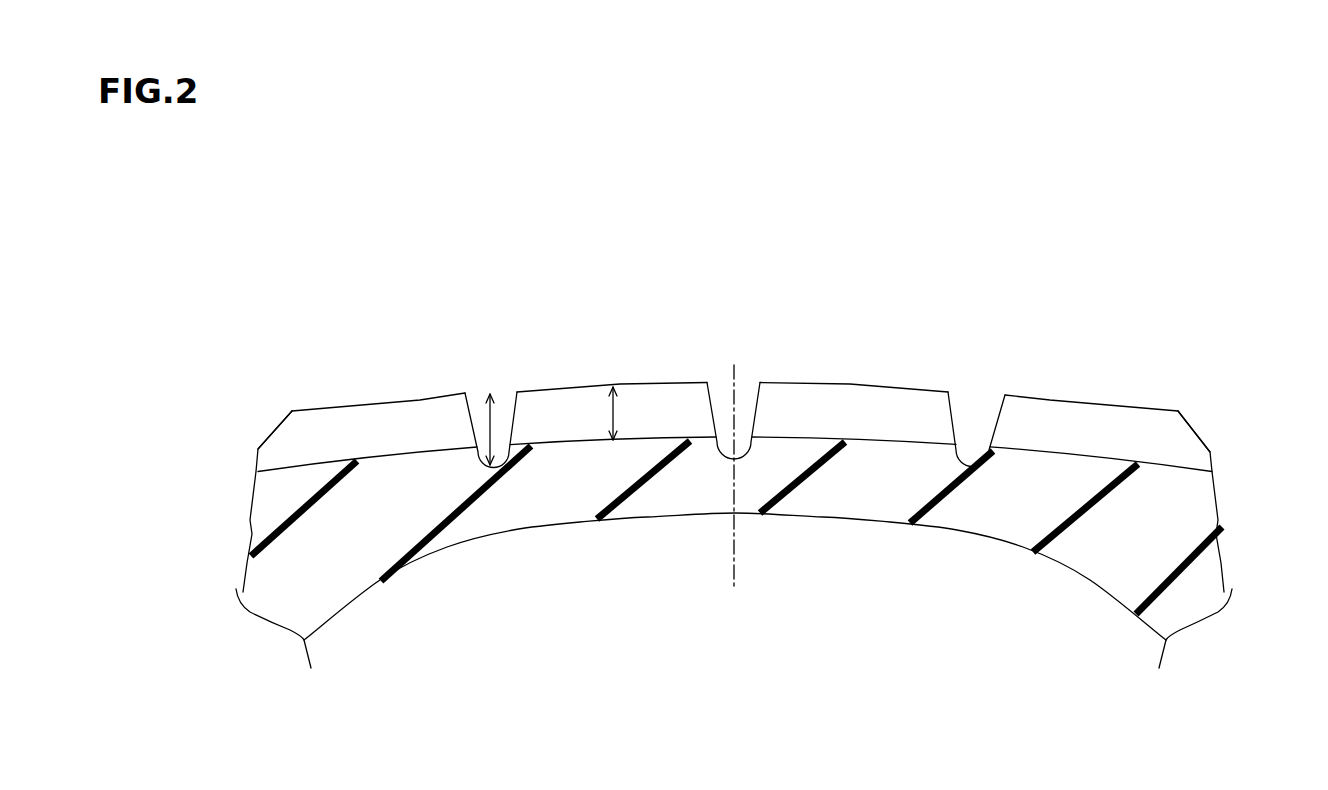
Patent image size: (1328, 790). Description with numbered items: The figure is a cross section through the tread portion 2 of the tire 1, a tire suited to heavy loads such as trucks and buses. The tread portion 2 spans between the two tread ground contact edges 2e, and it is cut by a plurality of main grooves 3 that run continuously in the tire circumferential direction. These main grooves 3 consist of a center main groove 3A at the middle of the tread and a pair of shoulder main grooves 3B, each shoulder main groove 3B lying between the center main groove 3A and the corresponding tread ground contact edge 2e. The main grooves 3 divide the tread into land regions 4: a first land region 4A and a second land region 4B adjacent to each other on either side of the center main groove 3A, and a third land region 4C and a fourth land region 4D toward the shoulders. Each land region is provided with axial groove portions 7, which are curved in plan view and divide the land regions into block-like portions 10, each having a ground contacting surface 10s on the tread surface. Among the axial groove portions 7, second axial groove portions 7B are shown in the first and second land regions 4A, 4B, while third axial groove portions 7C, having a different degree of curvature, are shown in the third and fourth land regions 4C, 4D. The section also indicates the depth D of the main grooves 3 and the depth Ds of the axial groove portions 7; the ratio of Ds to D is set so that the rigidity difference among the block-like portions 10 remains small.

The tire 1 is at (285, 266).
The tread portion 2 is at (1133, 406).
The tread ground contact edge 2e is at (292, 410).
The main groove 3 is at (712, 380).
The center main groove 3A is at (720, 408).
The shoulder main groove 3B is at (505, 408).
The land region 4 is at (612, 327).
The first land region 4A is at (573, 386).
The second land region 4B is at (860, 382).
The third land region 4C is at (362, 400).
The fourth land region 4D is at (1083, 402).
The axial groove portion 7 is at (715, 507).
The second axial groove portion 7B is at (650, 440).
The third axial groove portion 7C is at (292, 466).
The block-like portion 10 is at (793, 379).
The ground contacting surface 10s is at (420, 399).
The depth of main groove D is at (487, 432).
The depth of axial groove portion Ds is at (610, 404).